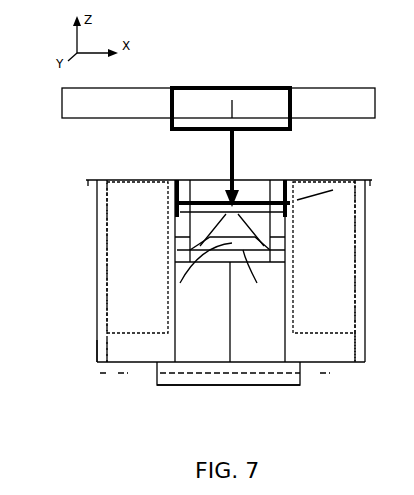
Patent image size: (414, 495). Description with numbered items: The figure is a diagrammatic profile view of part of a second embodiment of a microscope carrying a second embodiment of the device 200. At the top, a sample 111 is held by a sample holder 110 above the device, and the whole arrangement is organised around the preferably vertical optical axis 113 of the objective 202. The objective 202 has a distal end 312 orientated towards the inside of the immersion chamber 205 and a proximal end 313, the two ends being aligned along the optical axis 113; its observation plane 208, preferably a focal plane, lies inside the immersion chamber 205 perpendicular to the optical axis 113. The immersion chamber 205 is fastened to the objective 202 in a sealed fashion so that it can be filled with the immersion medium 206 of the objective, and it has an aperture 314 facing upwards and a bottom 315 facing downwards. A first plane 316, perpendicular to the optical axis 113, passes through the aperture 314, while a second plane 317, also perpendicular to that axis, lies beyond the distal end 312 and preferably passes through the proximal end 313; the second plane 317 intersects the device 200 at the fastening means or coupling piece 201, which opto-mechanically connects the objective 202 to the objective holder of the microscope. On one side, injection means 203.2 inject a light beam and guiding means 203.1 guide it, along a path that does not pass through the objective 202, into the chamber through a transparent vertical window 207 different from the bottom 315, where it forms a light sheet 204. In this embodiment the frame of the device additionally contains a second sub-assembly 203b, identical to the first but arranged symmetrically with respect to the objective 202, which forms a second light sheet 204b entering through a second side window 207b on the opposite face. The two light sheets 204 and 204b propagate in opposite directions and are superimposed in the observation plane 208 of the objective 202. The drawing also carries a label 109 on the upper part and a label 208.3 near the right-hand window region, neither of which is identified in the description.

The top plate 109 is at (150, 78).
The sample holder 110 is at (300, 128).
The sample 111 is at (222, 186).
The optical axis 113 is at (210, 408).
The device 200 is at (84, 234).
The fastening means (coupling piece) 201 is at (298, 396).
The objective 202 is at (180, 376).
The guiding means 203.1 is at (92, 338).
The injection means 203.2 is at (100, 371).
The second sub-assembly 203b is at (359, 354).
The light sheet 204 is at (146, 224).
The second light sheet 204b is at (325, 228).
The immersion chamber 205 is at (258, 202).
The immersion medium 206 is at (250, 176).
The vertical face (window) 207 is at (172, 172).
The second side window 207b is at (293, 267).
The observation plane 208 is at (173, 203).
The membrane section 208.3 is at (300, 205).
The distal end 312 is at (247, 254).
The proximal end 313 is at (265, 363).
The aperture 314 is at (252, 198).
The bottom 315 is at (270, 244).
The first plane 316 is at (78, 176).
The second plane 317 is at (157, 377).